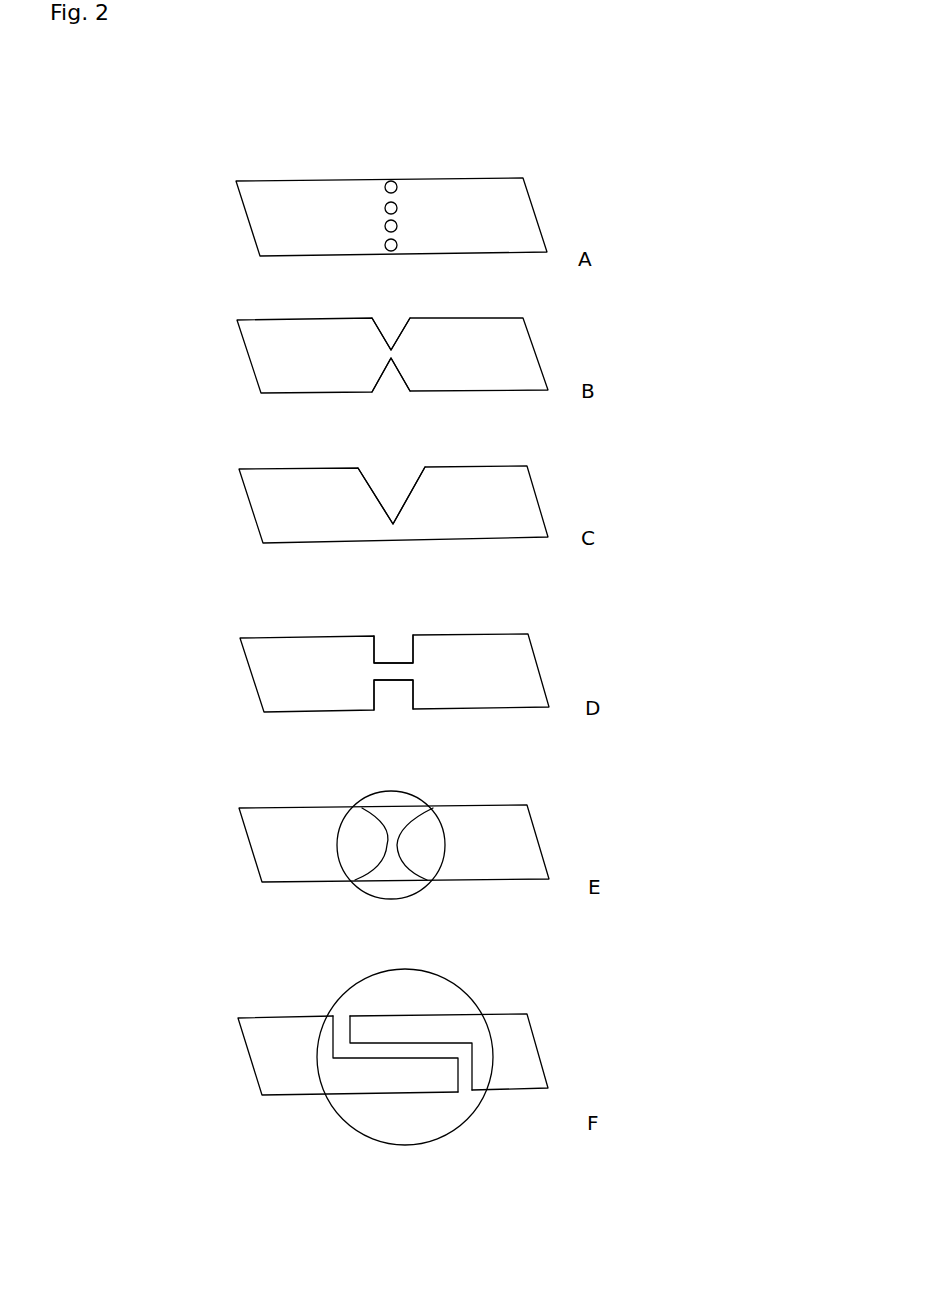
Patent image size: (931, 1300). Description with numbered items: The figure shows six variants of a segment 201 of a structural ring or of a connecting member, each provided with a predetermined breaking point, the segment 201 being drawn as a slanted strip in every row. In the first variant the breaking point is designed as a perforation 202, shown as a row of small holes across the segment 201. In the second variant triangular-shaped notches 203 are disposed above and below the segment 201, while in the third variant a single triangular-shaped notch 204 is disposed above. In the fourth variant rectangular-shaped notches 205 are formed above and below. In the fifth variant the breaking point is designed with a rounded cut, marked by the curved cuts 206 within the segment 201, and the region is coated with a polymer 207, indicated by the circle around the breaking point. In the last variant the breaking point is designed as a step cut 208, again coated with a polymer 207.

The segment 201 is at (318, 640).
The perforation 202 is at (391, 182).
The triangular-shaped notches 203 is at (390, 318).
The triangular-shaped notch 204 is at (394, 500).
The rectangular-shaped notches 205 is at (386, 631).
The arc-shaped cuts 206 is at (392, 860).
The polymer 207 is at (375, 898).
The step cut 208 is at (435, 1050).